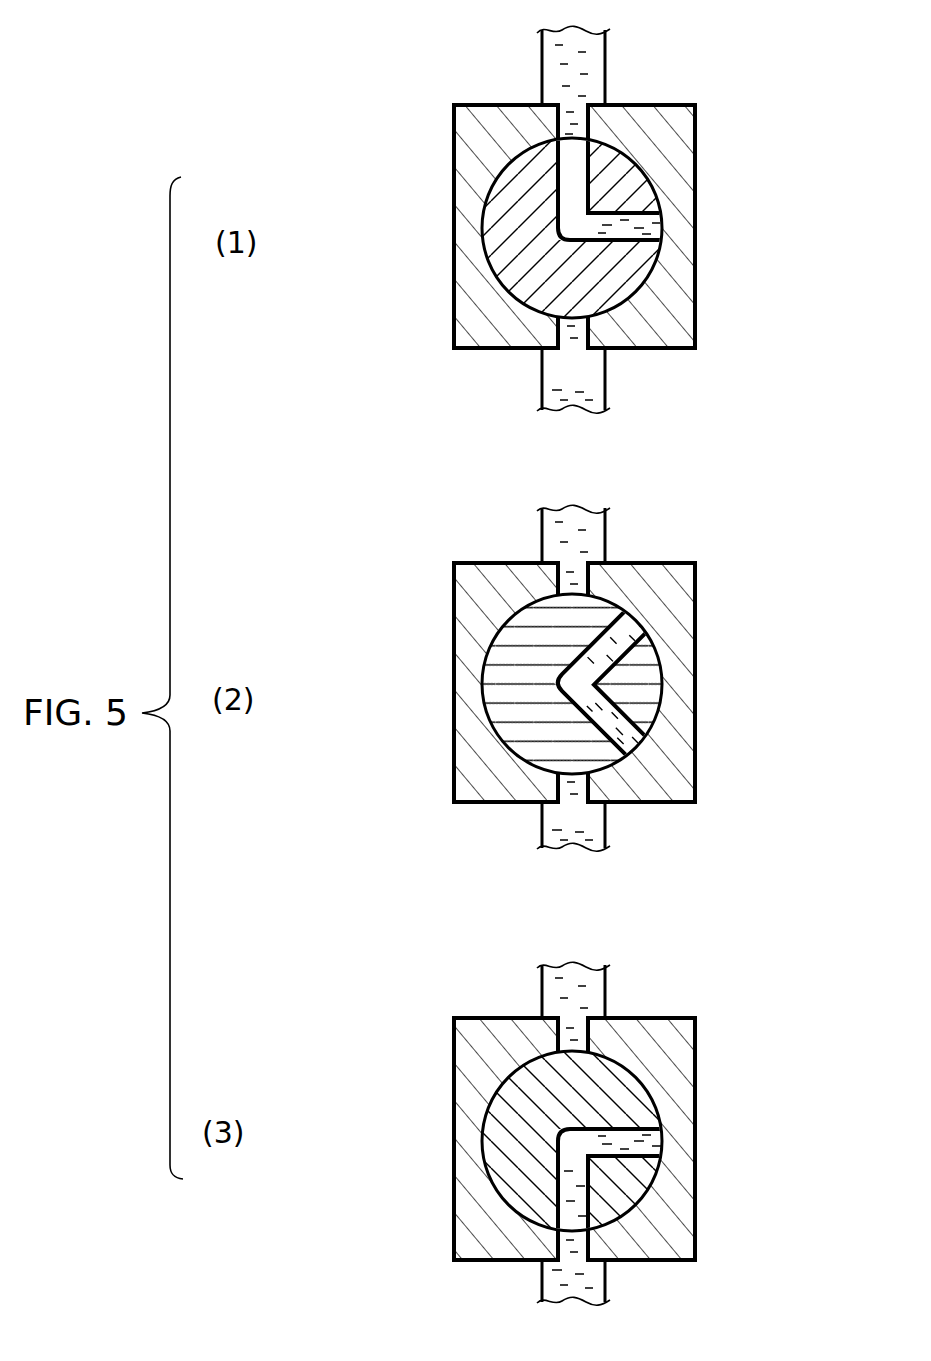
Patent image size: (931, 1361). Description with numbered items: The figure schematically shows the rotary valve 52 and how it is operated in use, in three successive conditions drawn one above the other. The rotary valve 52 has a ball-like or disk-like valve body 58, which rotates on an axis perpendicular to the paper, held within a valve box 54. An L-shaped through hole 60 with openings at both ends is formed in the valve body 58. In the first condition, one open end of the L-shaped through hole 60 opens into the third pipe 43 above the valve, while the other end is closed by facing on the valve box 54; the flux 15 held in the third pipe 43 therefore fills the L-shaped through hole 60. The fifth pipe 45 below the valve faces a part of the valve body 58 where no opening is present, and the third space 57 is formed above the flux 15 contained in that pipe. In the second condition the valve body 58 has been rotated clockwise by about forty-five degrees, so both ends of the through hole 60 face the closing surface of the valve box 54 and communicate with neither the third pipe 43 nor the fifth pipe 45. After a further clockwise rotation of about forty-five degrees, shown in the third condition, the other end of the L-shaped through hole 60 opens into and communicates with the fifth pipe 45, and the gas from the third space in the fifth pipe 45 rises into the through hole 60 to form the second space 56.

The flux 15 is at (560, 74).
The third pipe 43 is at (606, 62).
The fifth pipe 45 is at (607, 378).
The rotary valve 52 is at (443, 140).
The valve box 54 is at (680, 175).
The second space 56 is at (652, 1135).
The third space 57 is at (563, 365).
The valve body 58 is at (505, 245).
The L-shaped through hole 60 is at (635, 255).